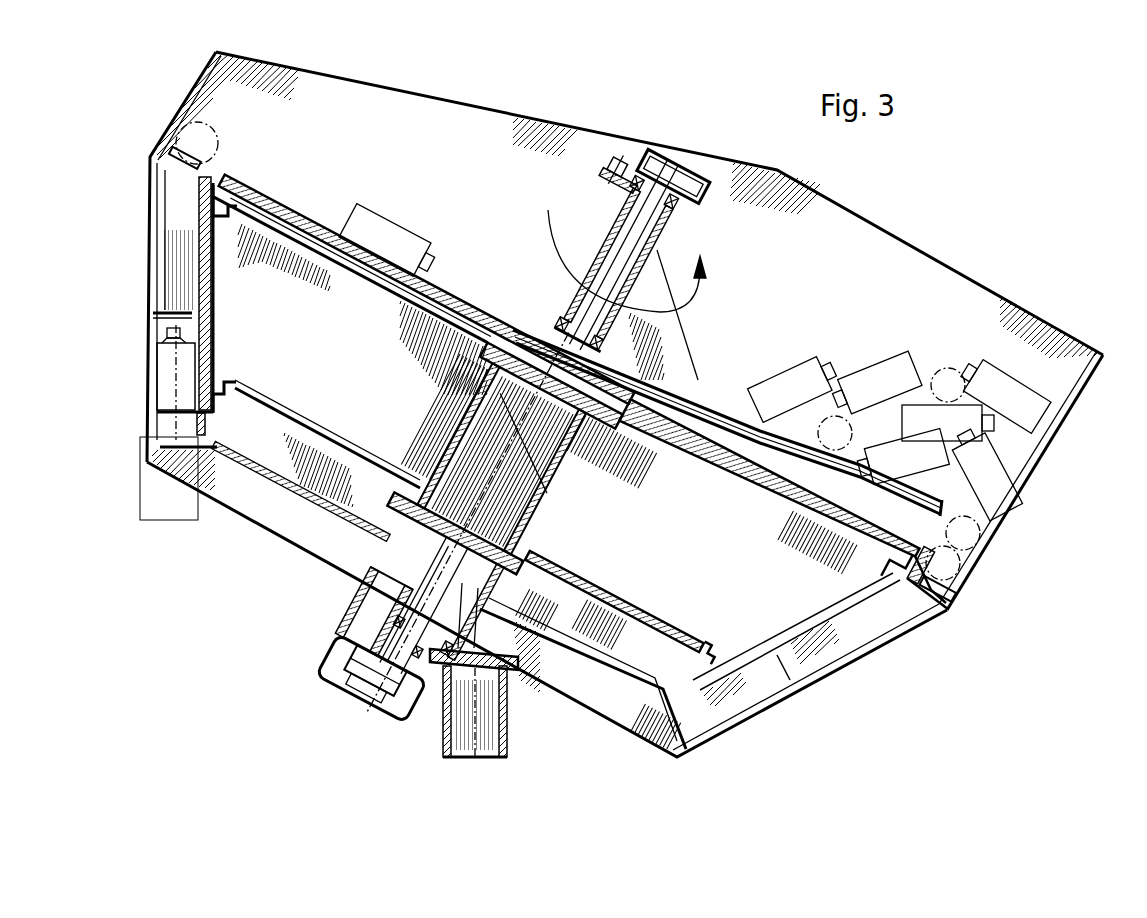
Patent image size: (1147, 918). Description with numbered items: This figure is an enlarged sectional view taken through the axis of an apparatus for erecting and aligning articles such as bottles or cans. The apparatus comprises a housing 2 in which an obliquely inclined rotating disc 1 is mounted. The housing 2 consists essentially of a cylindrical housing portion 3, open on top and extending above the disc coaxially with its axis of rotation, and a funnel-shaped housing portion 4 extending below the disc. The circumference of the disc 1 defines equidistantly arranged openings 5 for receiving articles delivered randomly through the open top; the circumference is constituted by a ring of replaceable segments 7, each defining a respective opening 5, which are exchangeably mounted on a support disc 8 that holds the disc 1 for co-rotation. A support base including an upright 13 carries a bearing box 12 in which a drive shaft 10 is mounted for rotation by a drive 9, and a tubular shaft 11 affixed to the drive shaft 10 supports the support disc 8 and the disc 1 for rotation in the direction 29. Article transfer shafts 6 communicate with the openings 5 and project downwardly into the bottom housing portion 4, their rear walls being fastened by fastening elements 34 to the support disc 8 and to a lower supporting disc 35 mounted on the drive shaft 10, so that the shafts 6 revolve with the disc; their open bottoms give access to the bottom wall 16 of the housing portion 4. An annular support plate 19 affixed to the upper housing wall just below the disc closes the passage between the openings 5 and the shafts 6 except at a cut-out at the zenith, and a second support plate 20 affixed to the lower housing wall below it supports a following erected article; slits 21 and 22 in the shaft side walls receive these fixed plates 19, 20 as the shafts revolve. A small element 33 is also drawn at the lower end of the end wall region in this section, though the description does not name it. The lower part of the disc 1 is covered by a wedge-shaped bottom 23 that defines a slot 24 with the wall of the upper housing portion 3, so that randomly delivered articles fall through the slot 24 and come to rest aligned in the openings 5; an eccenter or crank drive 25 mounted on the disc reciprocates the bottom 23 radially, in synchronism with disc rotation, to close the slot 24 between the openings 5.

The rotating disc 1 is at (277, 204).
The housing 2 is at (963, 565).
The cylindrical housing portion 3 is at (1078, 400).
The funnel-shaped housing portion 4 is at (747, 723).
The openings 5 is at (199, 162).
The article transfer shafts 6 is at (168, 248).
The segments 7 is at (230, 172).
The support disc 8 is at (463, 307).
The drive 9 is at (357, 675).
The drive shaft 10 is at (400, 630).
The tubular shaft 11 is at (549, 490).
The bearing box 12 is at (362, 582).
The upright 13 is at (490, 737).
The bottom wall 16 is at (268, 482).
The annular support plate 19 is at (177, 168).
The support plate 20 is at (157, 327).
The slit 21 is at (153, 312).
The slit 22 is at (148, 160).
The wedge-shaped bottom 23 is at (787, 455).
The slot 24 is at (937, 537).
The eccenter or crank drive 25 is at (635, 188).
The direction of rotation 29 is at (712, 303).
The seal block 33 is at (207, 423).
The fastening elements 34 is at (710, 660).
The lower supporting disc 35 is at (583, 580).